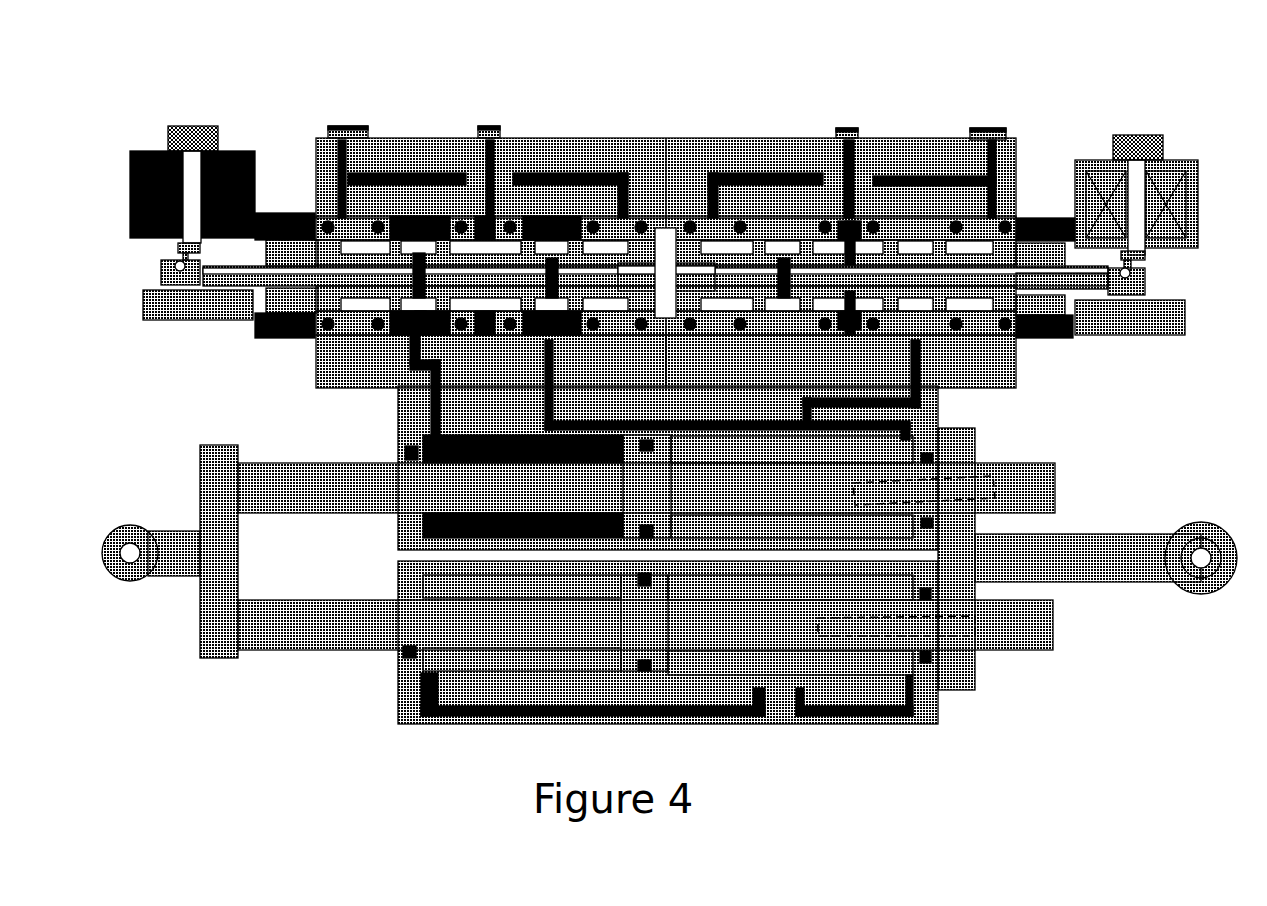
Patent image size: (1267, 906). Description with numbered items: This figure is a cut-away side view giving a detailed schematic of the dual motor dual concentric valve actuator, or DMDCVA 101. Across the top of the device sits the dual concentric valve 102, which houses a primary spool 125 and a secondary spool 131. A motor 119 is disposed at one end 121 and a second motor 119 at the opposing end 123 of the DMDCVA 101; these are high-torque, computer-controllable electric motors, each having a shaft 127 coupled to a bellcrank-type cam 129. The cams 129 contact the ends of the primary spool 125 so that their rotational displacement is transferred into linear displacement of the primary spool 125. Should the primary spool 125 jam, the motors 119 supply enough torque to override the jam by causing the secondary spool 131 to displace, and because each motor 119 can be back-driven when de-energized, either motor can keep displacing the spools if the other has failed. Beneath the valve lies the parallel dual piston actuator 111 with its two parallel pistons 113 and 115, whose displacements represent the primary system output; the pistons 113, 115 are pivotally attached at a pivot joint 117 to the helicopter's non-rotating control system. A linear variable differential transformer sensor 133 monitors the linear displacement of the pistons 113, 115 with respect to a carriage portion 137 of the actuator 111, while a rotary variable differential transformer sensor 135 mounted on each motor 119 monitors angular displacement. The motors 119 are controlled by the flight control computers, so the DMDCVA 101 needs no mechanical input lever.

The dual motor dual concentric valve actuator 101 is at (170, 56).
The dual concentric valve 102 is at (425, 126).
The parallel dual piston actuator 111 is at (474, 720).
The piston 113 is at (340, 610).
The piston 115 is at (333, 480).
The pivot joint 117 is at (184, 576).
The motor 119 is at (232, 141).
The end 121 is at (306, 343).
The opposing end 123 is at (1002, 352).
The primary spool 125 is at (653, 283).
The shaft 127 is at (185, 205).
The bellcrank-type cam 129 is at (155, 256).
The secondary spool 131 is at (518, 248).
The linear variable differential transformer sensor 133 is at (985, 470).
The rotary variable differential transformer sensor 135 is at (190, 118).
The carriage portion 137 is at (915, 415).